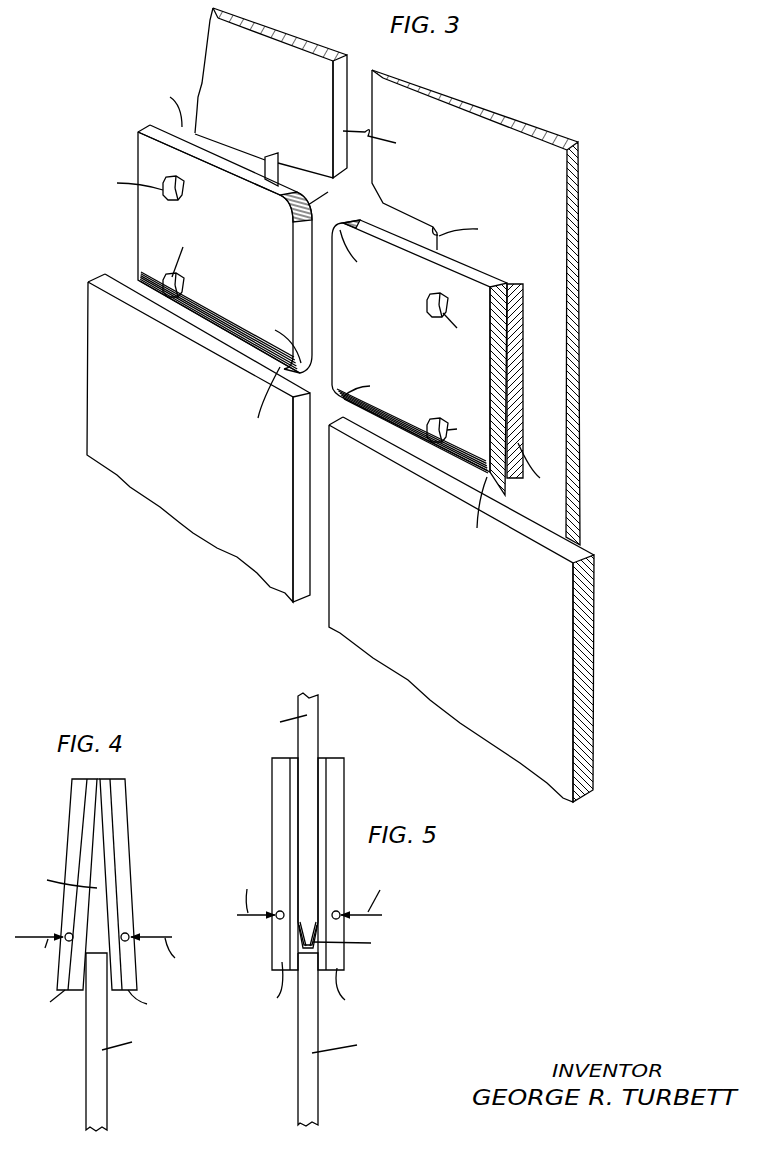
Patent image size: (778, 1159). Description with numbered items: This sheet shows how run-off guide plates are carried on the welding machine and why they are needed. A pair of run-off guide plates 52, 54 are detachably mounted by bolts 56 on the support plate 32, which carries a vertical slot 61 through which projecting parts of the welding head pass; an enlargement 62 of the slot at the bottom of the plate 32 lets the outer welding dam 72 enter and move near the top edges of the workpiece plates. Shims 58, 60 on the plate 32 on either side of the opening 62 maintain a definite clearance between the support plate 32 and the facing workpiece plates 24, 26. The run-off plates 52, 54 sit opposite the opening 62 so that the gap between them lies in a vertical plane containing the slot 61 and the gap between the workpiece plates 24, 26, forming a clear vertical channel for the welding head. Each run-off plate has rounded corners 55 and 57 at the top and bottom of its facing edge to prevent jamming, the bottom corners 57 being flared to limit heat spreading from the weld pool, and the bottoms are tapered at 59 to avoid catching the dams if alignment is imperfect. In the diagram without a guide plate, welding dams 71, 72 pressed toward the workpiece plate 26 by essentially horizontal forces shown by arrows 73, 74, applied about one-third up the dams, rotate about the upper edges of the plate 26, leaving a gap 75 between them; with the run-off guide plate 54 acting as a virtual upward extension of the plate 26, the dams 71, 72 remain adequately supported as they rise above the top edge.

In FIG. 3, the workpiece plate 24 is at (461, 609).
In FIG. 3, the workpiece plate 26 is at (198, 438).
In FIG. 4, the workpiece plate 26 is at (121, 1042).
In FIG. 5, the workpiece plate 26 is at (340, 1039).
In FIG. 3, the support plate 32 is at (387, 276).
In FIG. 3, the run-off guide plate 52 is at (419, 357).
In FIG. 3, the run-off guide plate 54 is at (225, 249).
In FIG. 5, the run-off guide plate 54 is at (285, 820).
In FIG. 3, the rounded corner 55 is at (332, 229).
In FIG. 3, the bolt 56 is at (287, 306).
In FIG. 3, the rounded corner 57 is at (314, 372).
In FIG. 3, the shim 58 is at (535, 387).
In FIG. 3, the taper 59 is at (382, 456).
In FIG. 5, the taper 59 is at (348, 940).
In FIG. 3, the shim 60 is at (206, 123).
In FIG. 3, the vertical slot 61 is at (382, 142).
In FIG. 3, the enlargement of the slot 62 is at (469, 229).
In FIG. 4, the welding dam 71 is at (62, 896).
In FIG. 5, the welding dam 71 is at (278, 886).
In FIG. 4, the welding dam 72 is at (135, 897).
In FIG. 5, the welding dam 72 is at (343, 887).
In FIG. 4, the arrow 73 is at (44, 949).
In FIG. 5, the arrow 73 is at (260, 894).
In FIG. 4, the arrow 74 is at (160, 950).
In FIG. 5, the arrow 74 is at (364, 894).
In FIG. 4, the gap between legs 75 is at (62, 834).